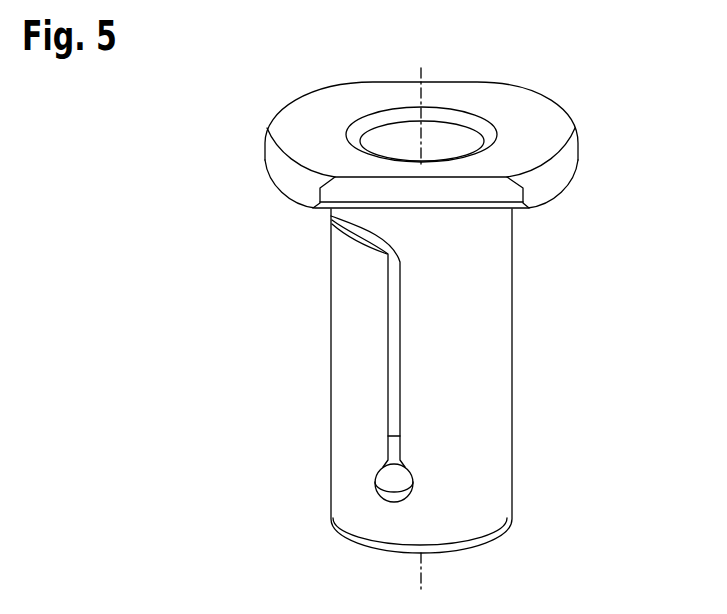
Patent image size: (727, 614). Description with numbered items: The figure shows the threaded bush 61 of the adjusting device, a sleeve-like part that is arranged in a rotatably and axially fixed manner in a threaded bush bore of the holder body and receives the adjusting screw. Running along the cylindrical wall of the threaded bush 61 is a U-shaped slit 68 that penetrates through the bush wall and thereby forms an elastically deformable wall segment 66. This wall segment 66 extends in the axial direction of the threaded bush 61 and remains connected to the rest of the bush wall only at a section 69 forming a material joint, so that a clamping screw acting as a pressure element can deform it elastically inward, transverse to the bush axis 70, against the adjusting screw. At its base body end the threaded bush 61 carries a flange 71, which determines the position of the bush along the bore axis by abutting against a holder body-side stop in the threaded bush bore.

The threaded bush 61 is at (593, 322).
The wall segment 66 is at (360, 367).
The U-shaped slit 68 is at (393, 418).
The section forming a material joint 69 is at (393, 523).
The bush axis 70 is at (423, 73).
The flange 71 is at (563, 153).